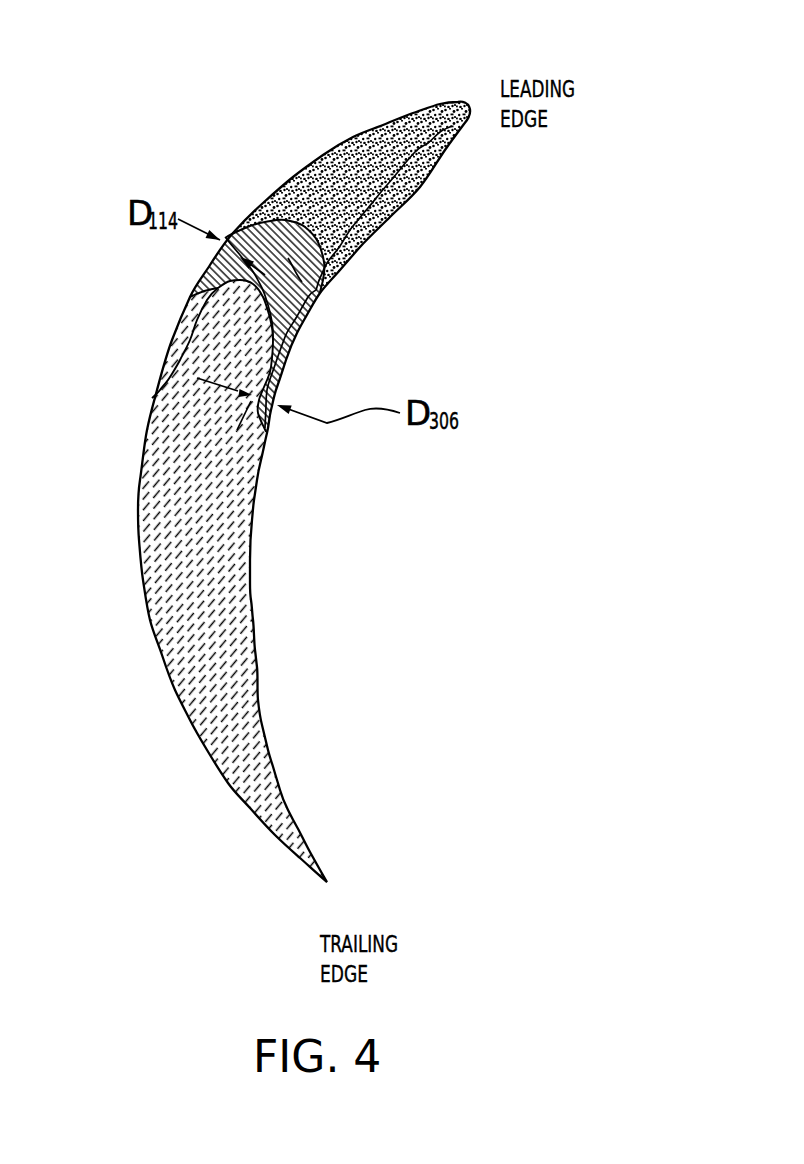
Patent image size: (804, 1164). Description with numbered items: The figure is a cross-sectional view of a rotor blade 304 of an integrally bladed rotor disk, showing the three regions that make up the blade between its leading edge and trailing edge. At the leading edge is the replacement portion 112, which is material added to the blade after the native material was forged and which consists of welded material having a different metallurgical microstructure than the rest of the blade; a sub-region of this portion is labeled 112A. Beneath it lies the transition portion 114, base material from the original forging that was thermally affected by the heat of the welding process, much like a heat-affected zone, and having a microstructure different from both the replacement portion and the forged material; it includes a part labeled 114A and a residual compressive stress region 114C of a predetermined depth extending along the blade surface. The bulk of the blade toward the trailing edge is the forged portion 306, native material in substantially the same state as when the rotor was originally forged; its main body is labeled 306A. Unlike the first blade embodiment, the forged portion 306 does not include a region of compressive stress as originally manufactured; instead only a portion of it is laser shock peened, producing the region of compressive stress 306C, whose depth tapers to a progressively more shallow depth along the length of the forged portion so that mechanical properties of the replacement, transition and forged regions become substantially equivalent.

The replacement portion 112 is at (338, 116).
The outer layer of leading edge sheath 112A is at (377, 167).
The transition portion 114 is at (162, 268).
The thick portion of intermediate layer 114A is at (308, 291).
The residual compressive stress region 114C is at (286, 347).
The rotor blade 304 is at (172, 818).
The forged portion 306 is at (128, 631).
The main portion of airfoil body 306A is at (203, 592).
The region of compressive stress 306C is at (270, 413).